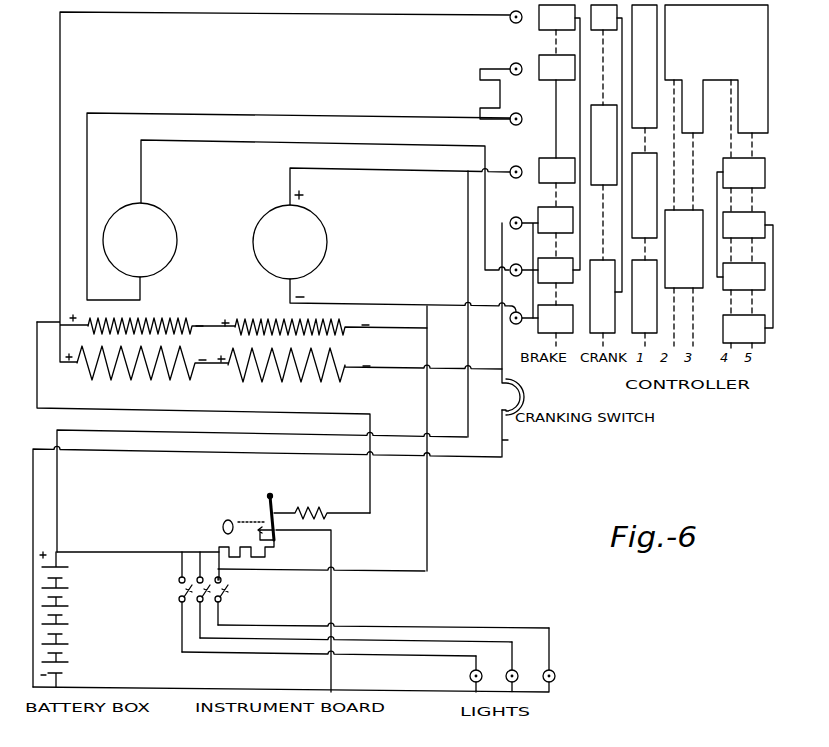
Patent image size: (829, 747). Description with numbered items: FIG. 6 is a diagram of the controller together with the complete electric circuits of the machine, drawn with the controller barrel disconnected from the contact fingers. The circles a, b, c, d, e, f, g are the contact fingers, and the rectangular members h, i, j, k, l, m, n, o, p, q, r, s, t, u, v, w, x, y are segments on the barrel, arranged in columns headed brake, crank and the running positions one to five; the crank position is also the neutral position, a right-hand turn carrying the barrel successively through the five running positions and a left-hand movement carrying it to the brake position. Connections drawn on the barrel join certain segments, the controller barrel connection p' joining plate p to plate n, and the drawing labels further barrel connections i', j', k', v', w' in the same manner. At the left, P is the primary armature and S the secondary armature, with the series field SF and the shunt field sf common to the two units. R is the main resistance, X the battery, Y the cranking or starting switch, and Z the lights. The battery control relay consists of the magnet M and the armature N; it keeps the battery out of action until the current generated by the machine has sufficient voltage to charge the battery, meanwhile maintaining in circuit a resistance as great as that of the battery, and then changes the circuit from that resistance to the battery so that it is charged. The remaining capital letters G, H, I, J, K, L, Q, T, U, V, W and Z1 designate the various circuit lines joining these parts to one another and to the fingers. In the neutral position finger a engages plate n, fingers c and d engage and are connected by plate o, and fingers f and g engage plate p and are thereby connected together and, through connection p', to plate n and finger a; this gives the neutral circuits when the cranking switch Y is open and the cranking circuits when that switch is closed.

The contact finger a is at (517, 11).
The contact finger b is at (518, 62).
The contact finger c is at (517, 112).
The contact finger d is at (518, 165).
The contact finger e is at (524, 260).
The contact finger f is at (524, 263).
The contact finger g is at (524, 311).
The circuit line G is at (273, 181).
The circuit line H is at (298, 198).
The circuit line I is at (325, 197).
The circuit line J is at (400, 178).
The circuit line K is at (403, 295).
The circuit line L is at (203, 417).
The magnet M is at (322, 503).
The armature N is at (268, 496).
The primary armature P is at (290, 244).
The circuit line Q is at (138, 544).
The main resistance R is at (478, 97).
The secondary armature S is at (140, 240).
The circuit line T is at (268, 548).
The circuit line U is at (329, 438).
The circuit line V is at (312, 611).
The circuit line W is at (294, 622).
The battery X is at (62, 619).
The cranking switch Y is at (519, 319).
The lights Z is at (470, 675).
The conductor Z1 is at (262, 483).
The shunt field sf is at (250, 314).
The series field SF is at (186, 385).
The barrel segment h is at (559, 137).
The barrel segment i is at (557, 55).
The barrel segment j is at (557, 131).
The barrel segment k is at (555, 208).
The barrel segment l is at (555, 258).
The barrel segment m is at (555, 314).
The barrel segment n is at (606, 148).
The barrel segment o is at (604, 107).
The barrel segment p is at (602, 265).
The barrel segment q is at (644, 66).
The barrel segment r is at (644, 183).
The barrel segment s is at (644, 292).
The barrel segment t is at (716, 69).
The barrel segment u is at (684, 213).
The barrel segment v is at (741, 178).
The barrel segment w is at (748, 258).
The barrel segment x is at (744, 264).
The barrel segment y is at (744, 320).
The connection i' is at (570, 139).
The connection j' is at (562, 116).
The connection k' is at (541, 245).
The controller barrel connection p' is at (613, 213).
The connection v' is at (707, 193).
The connection w' is at (786, 258).